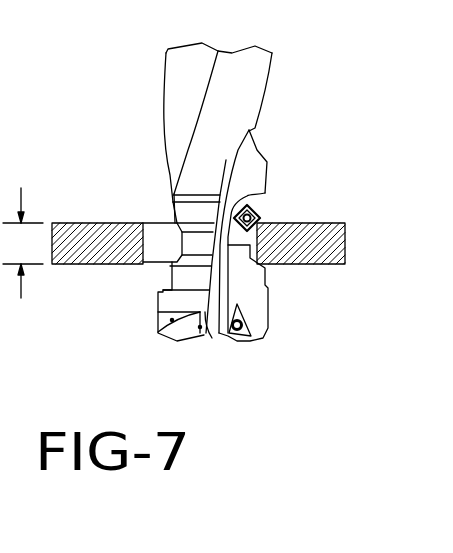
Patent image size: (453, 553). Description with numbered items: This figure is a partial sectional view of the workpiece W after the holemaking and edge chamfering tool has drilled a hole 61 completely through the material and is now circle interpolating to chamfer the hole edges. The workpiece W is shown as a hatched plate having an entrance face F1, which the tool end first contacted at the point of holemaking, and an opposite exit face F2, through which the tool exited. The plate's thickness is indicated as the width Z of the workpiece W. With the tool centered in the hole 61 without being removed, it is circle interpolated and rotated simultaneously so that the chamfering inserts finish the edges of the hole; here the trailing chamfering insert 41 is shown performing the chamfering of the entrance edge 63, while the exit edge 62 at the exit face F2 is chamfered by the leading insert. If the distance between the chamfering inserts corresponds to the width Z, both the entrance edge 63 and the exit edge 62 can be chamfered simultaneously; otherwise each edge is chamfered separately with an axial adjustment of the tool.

The trailing chamfering insert 41 is at (261, 212).
The hole 61 is at (160, 240).
The exit edge 62 is at (148, 266).
The entrance edge 63 is at (151, 230).
The workpiece W is at (330, 222).
The width of the workpiece Z is at (23, 243).
The entrance face F1 is at (57, 218).
The exit face F2 is at (300, 270).